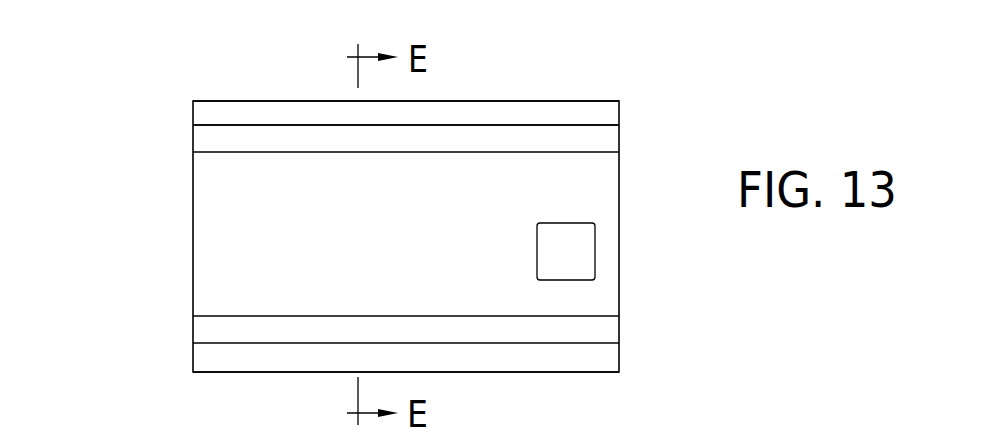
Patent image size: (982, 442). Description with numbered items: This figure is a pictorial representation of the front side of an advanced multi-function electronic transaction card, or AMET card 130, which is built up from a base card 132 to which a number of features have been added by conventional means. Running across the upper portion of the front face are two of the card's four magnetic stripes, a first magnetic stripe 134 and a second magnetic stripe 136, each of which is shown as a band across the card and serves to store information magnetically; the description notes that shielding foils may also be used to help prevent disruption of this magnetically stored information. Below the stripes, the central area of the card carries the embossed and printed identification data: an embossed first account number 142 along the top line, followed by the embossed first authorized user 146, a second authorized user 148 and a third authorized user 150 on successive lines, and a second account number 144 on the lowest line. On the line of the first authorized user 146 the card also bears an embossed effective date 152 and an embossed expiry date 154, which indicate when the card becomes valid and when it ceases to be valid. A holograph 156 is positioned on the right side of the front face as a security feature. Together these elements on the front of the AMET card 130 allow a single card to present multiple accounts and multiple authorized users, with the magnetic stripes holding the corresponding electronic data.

The AMET card 130 is at (250, 83).
The base card 132 is at (583, 99).
The first magnetic stripe 134 is at (619, 137).
The second magnetic stripe 136 is at (620, 331).
The embossed first account number 142 is at (220, 171).
The second account number 144 is at (223, 272).
The embossed first authorized user 146 is at (218, 195).
The second authorized user 148 is at (222, 227).
The third authorized user 150 is at (220, 252).
The embossed effective date 152 is at (522, 187).
The embossed expiry date 154 is at (618, 205).
The holograph 156 is at (580, 282).